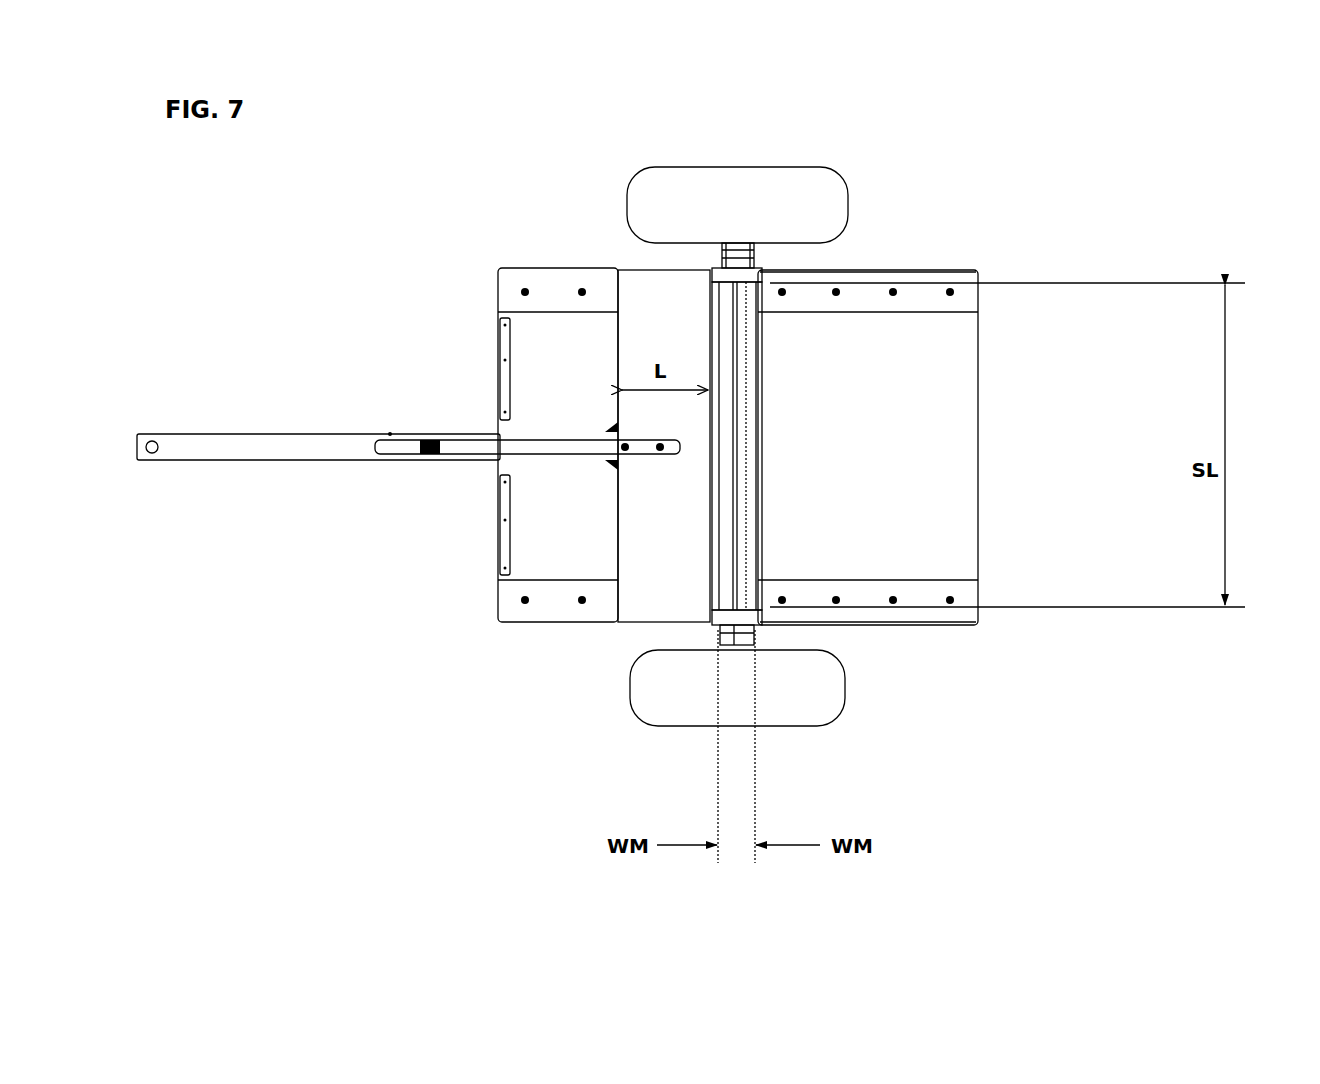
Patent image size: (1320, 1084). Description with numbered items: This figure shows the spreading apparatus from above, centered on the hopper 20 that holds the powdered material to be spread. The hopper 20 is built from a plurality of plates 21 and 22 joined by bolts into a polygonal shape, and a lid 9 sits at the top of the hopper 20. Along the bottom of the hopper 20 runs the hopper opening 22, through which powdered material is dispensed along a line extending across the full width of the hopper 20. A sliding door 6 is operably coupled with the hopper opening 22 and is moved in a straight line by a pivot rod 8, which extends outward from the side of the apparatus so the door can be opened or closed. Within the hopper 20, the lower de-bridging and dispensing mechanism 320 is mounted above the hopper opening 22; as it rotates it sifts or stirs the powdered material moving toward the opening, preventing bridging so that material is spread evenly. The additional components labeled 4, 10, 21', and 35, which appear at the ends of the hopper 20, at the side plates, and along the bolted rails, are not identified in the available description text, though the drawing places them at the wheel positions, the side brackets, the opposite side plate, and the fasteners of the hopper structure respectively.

The wheel 4 is at (626, 196).
The sliding door 6 is at (617, 366).
The pivot rod 8 is at (412, 444).
The lid 9 is at (982, 410).
The bracket 10 is at (497, 388).
The hopper 20 is at (934, 578).
The plate 21 is at (982, 419).
The frame member 21' is at (495, 484).
The hopper opening 22 is at (904, 268).
The fastener 35 is at (952, 607).
The lower de-bridging and dispensing mechanism 320 is at (776, 368).